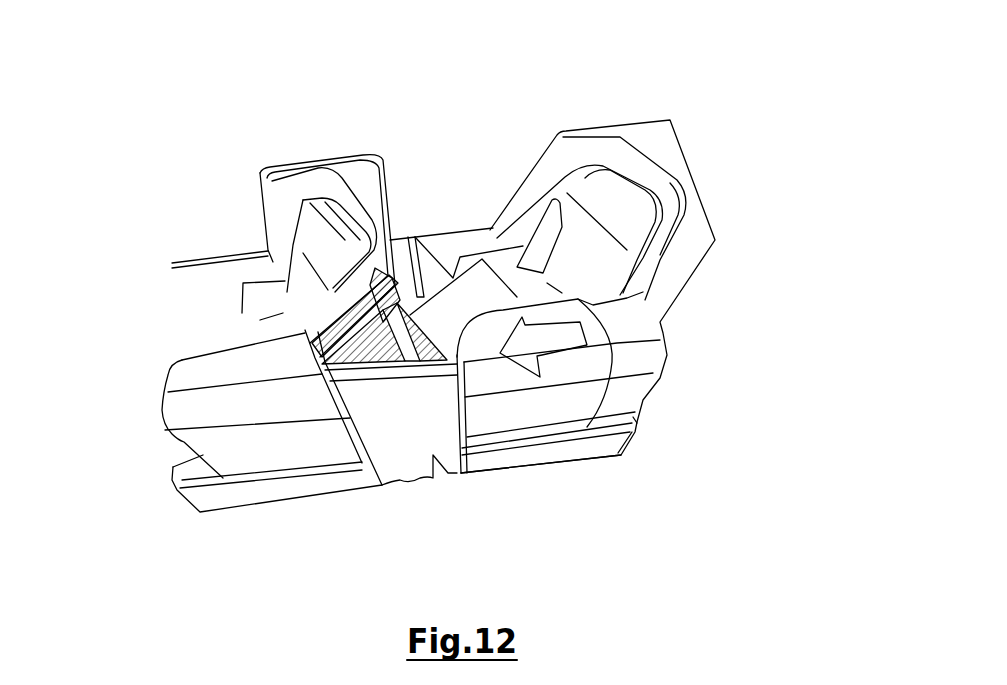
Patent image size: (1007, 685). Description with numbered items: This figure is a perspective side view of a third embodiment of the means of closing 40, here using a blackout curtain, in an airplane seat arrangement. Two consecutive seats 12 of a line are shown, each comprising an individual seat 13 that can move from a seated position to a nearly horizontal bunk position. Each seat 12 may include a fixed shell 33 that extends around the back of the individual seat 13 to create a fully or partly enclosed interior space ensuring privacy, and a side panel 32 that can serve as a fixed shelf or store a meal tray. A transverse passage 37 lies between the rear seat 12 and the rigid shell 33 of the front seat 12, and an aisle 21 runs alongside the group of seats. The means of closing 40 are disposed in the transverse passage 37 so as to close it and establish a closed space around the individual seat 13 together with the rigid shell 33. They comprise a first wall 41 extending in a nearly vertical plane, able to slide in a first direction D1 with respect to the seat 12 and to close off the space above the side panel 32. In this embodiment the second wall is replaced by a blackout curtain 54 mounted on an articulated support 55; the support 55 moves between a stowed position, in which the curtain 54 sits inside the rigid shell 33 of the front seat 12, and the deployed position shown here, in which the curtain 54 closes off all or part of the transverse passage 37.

The seat 12 is at (321, 123).
The individual seat 13 is at (303, 273).
The fixed shell 33 is at (397, 207).
The support 55 is at (317, 361).
The blackout curtain 54 is at (373, 427).
The transverse passage 37 is at (392, 511).
The means of closing 40 is at (448, 473).
The first wall 41 is at (570, 398).
The first direction D1 is at (563, 340).
The side panel 32 is at (648, 378).
The aisle 21 is at (603, 500).